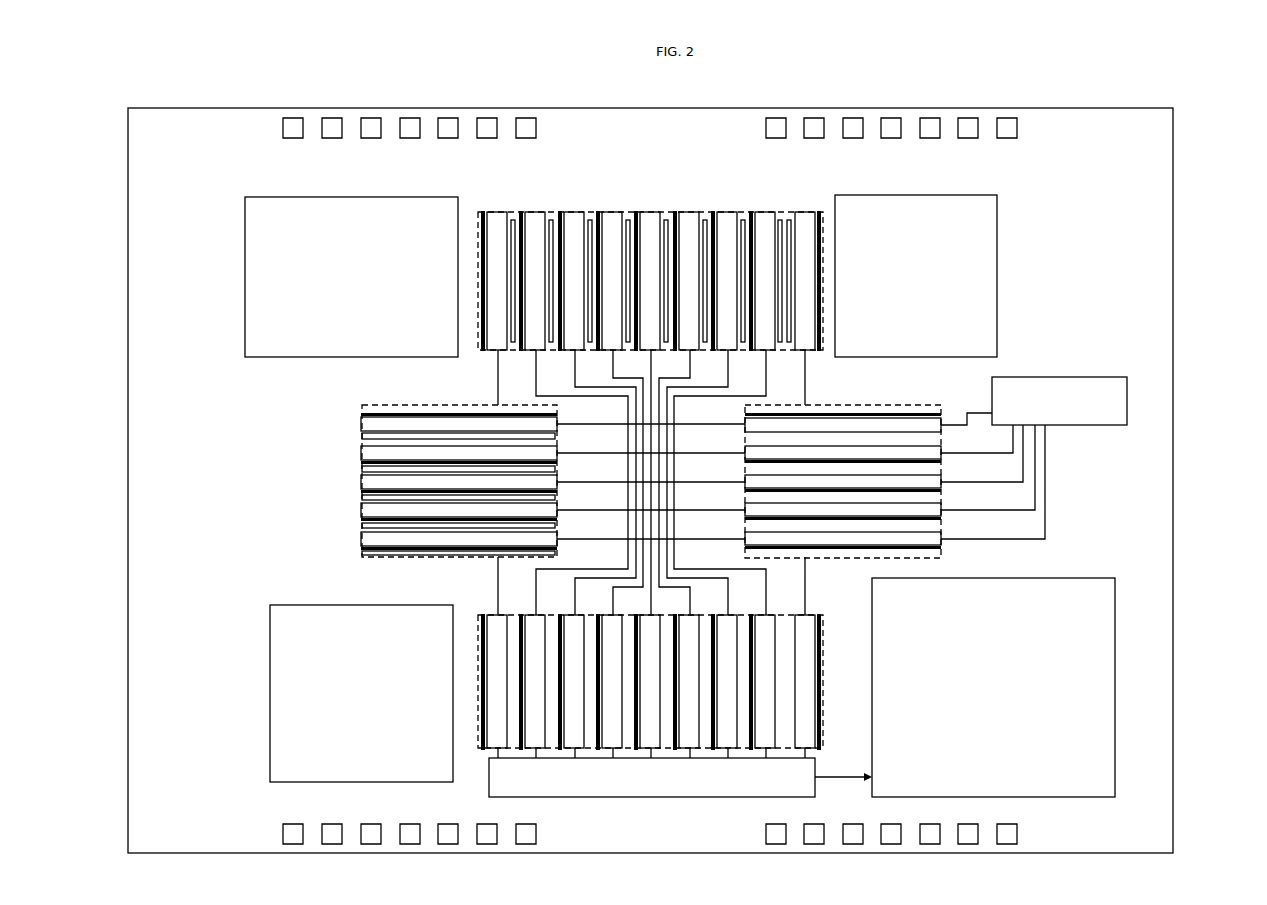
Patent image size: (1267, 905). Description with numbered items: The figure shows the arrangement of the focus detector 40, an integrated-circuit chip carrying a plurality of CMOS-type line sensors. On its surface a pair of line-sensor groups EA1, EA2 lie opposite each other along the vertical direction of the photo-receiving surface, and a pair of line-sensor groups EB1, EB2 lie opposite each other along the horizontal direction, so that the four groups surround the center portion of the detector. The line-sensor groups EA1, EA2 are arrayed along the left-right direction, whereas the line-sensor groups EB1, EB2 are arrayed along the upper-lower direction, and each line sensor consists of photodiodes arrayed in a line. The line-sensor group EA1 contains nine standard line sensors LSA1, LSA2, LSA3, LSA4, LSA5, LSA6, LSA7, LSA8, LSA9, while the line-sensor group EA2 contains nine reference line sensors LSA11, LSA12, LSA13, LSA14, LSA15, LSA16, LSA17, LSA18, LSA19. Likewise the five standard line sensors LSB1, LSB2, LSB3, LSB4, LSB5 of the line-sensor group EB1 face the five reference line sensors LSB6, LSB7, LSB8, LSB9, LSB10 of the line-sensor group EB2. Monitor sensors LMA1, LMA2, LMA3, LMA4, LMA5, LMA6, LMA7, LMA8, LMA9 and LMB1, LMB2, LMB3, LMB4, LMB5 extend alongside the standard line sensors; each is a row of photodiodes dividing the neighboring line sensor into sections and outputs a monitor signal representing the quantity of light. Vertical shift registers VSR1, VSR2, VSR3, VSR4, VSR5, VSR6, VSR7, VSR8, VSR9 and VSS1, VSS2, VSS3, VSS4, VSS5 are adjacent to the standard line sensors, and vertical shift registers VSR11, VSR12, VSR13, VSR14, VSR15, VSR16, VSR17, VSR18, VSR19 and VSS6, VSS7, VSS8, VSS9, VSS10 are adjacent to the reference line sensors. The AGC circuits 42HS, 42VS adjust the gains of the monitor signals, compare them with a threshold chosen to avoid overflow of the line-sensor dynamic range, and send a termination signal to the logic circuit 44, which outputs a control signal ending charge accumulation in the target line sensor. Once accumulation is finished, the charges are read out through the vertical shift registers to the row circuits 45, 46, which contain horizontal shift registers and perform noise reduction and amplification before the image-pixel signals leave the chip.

The focus detector 40 is at (1196, 159).
The AGC circuit 42HS is at (245, 277).
The AGC circuit 42VS is at (997, 277).
The logic circuit 44 is at (1115, 686).
The row circuit 45 is at (1062, 377).
The row circuit 46 is at (651, 798).
The line-sensor group EA1 is at (478, 333).
The line-sensor group EA2 is at (476, 740).
The line-sensor group EB1 is at (411, 403).
The line-sensor group EB2 is at (890, 403).
The vertical shift register VSR1 is at (483, 211).
The vertical shift register VSR2 is at (521, 211).
The vertical shift register VSR3 is at (560, 211).
The vertical shift register VSR4 is at (598, 211).
The vertical shift register VSR5 is at (637, 211).
The vertical shift register VSR6 is at (675, 211).
The vertical shift register VSR7 is at (713, 211).
The vertical shift register VSR8 is at (752, 211).
The vertical shift register VSR9 is at (820, 211).
The line sensor LSA1 is at (497, 210).
The line sensor LSA2 is at (535, 211).
The line sensor LSA3 is at (574, 211).
The line sensor LSA4 is at (612, 211).
The line sensor LSA5 is at (651, 211).
The line sensor LSA6 is at (689, 211).
The line sensor LSA7 is at (728, 211).
The line sensor LSA8 is at (766, 211).
The line sensor LSA9 is at (805, 211).
The monitor sensor LMA1 is at (513, 344).
The monitor sensor LMA2 is at (551, 344).
The monitor sensor LMA3 is at (590, 344).
The monitor sensor LMA4 is at (629, 344).
The monitor sensor LMA5 is at (667, 344).
The monitor sensor LMA6 is at (706, 344).
The monitor sensor LMA7 is at (744, 344).
The monitor sensor LMA8 is at (780, 343).
The monitor sensor LMA9 is at (789, 343).
The vertical shift register VSS1 is at (361, 414).
The vertical shift register VSS2 is at (361, 462).
The vertical shift register VSS3 is at (361, 490).
The vertical shift register VSS4 is at (361, 518).
The vertical shift register VSS5 is at (361, 547).
The vertical shift register VSS6 is at (947, 412).
The vertical shift register VSS7 is at (941, 461).
The vertical shift register VSS8 is at (941, 490).
The vertical shift register VSS9 is at (941, 518).
The vertical shift register VSS10 is at (941, 547).
The line sensor LSB1 is at (361, 424).
The line sensor LSB2 is at (361, 450).
The line sensor LSB3 is at (361, 479).
The line sensor LSB4 is at (361, 507).
The line sensor LSB5 is at (361, 535).
The line sensor LSB6 is at (940, 430).
The line sensor LSB7 is at (745, 453).
The line sensor LSB8 is at (745, 481).
The line sensor LSB9 is at (745, 509).
The line sensor LSB10 is at (745, 538).
The monitor sensor LMB1 is at (557, 436).
The monitor sensor LMB2 is at (557, 450).
The monitor sensor LMB3 is at (557, 477).
The monitor sensor LMB4 is at (557, 506).
The monitor sensor LMB5 is at (557, 534).
The vertical shift register VSR11 is at (483, 614).
The vertical shift register VSR12 is at (521, 614).
The vertical shift register VSR13 is at (560, 614).
The vertical shift register VSR14 is at (598, 614).
The vertical shift register VSR15 is at (636, 614).
The vertical shift register VSR16 is at (675, 614).
The vertical shift register VSR17 is at (713, 614).
The vertical shift register VSR18 is at (751, 614).
The vertical shift register VSR19 is at (819, 614).
The line sensor LSA11 is at (508, 738).
The line sensor LSA12 is at (547, 722).
The line sensor LSA13 is at (585, 705).
The line sensor LSA14 is at (623, 688).
The line sensor LSA15 is at (662, 672).
The line sensor LSA16 is at (700, 655).
The line sensor LSA17 is at (739, 637).
The line sensor LSA18 is at (777, 622).
The line sensor LSA19 is at (805, 614).